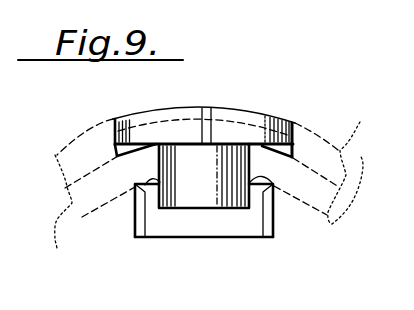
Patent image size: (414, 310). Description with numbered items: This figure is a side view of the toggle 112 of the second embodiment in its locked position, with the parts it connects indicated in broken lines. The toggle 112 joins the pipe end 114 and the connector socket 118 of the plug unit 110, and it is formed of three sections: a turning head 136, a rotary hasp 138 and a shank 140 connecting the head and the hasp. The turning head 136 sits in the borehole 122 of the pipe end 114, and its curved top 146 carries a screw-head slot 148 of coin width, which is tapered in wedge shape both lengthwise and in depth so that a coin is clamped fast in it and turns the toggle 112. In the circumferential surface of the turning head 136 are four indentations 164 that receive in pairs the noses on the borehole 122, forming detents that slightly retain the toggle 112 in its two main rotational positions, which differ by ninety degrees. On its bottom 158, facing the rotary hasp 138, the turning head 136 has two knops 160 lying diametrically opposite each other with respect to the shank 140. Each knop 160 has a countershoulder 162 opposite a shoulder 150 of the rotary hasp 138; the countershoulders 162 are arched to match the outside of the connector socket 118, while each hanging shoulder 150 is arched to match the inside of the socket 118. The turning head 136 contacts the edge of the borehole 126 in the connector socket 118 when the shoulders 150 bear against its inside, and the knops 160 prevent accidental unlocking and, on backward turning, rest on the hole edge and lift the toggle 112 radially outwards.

The plug unit 110 is at (226, 180).
The toggle 112 is at (153, 250).
The pipe end 114 is at (340, 150).
The connector socket 118 is at (57, 217).
The borehole 122 is at (296, 138).
The borehole 126 is at (199, 161).
The turning head 136 is at (122, 118).
The rotary hasp 138 is at (202, 238).
The shank 140 is at (214, 198).
The top 146 is at (226, 109).
The screw-head slot 148 is at (249, 110).
The shoulder 150 is at (146, 190).
The bottom 158 is at (184, 146).
The knop 160 is at (124, 158).
The countershoulder 162 is at (268, 149).
The indentation 164 is at (207, 107).